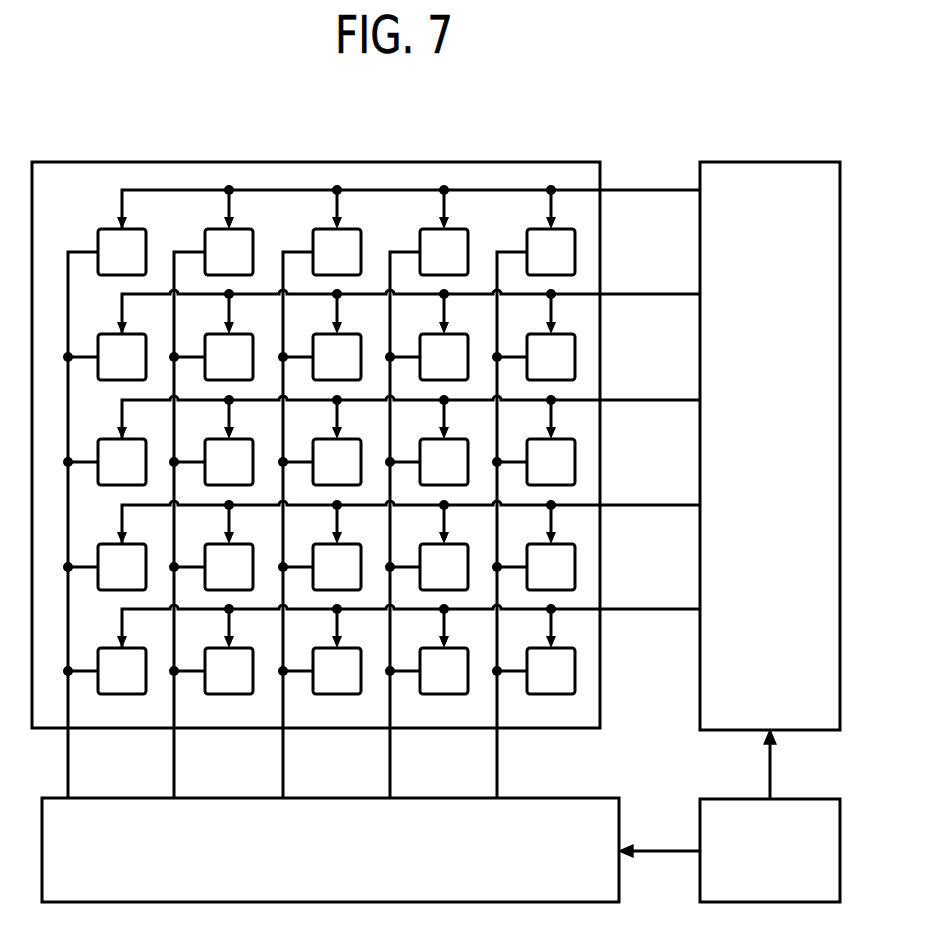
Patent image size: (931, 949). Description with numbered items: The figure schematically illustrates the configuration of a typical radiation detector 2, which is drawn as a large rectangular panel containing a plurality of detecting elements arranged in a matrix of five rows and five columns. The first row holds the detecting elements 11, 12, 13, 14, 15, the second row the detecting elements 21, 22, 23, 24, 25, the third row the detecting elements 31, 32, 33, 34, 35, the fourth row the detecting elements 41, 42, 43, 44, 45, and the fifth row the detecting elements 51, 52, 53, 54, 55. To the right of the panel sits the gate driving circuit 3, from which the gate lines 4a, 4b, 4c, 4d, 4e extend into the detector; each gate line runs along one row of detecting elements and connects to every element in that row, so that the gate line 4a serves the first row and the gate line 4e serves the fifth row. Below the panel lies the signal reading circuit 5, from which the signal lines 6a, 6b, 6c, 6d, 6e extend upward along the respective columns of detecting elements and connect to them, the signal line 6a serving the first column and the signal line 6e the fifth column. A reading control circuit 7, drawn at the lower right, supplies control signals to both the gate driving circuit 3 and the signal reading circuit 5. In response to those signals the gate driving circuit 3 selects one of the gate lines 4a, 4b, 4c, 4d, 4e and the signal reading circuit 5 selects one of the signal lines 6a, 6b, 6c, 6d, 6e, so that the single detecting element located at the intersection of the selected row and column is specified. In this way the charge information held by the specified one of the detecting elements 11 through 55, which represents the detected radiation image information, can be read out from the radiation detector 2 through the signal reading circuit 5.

The radiation detector 2 is at (534, 162).
The gate driving circuit 3 is at (729, 162).
The gate line 4a is at (658, 193).
The gate line 4b is at (626, 294).
The gate line 4c is at (626, 400).
The gate line 4d is at (626, 505).
The gate line 4e is at (626, 609).
The signal reading circuit 5 is at (597, 798).
The signal line 6a is at (70, 756).
The signal line 6b is at (176, 756).
The signal line 6c is at (285, 756).
The signal line 6d is at (392, 756).
The signal line 6e is at (499, 756).
The reading control circuit 7 is at (791, 798).
The detecting element 11 is at (122, 252).
The detecting element 12 is at (229, 252).
The detecting element 13 is at (337, 252).
The detecting element 14 is at (444, 252).
The detecting element 15 is at (551, 252).
The detecting element 21 is at (122, 357).
The detecting element 22 is at (229, 357).
The detecting element 23 is at (337, 357).
The detecting element 24 is at (444, 357).
The detecting element 25 is at (551, 357).
The detecting element 31 is at (122, 462).
The detecting element 32 is at (229, 462).
The detecting element 33 is at (337, 462).
The detecting element 34 is at (444, 462).
The detecting element 35 is at (551, 462).
The detecting element 41 is at (122, 567).
The detecting element 42 is at (229, 567).
The detecting element 43 is at (337, 567).
The detecting element 44 is at (444, 567).
The detecting element 45 is at (551, 567).
The detecting element 51 is at (122, 671).
The detecting element 52 is at (229, 671).
The detecting element 53 is at (337, 671).
The detecting element 54 is at (444, 671).
The detecting element 55 is at (551, 671).